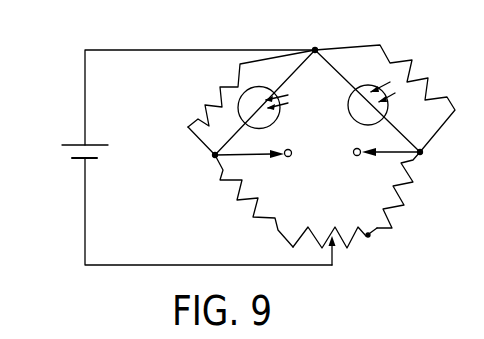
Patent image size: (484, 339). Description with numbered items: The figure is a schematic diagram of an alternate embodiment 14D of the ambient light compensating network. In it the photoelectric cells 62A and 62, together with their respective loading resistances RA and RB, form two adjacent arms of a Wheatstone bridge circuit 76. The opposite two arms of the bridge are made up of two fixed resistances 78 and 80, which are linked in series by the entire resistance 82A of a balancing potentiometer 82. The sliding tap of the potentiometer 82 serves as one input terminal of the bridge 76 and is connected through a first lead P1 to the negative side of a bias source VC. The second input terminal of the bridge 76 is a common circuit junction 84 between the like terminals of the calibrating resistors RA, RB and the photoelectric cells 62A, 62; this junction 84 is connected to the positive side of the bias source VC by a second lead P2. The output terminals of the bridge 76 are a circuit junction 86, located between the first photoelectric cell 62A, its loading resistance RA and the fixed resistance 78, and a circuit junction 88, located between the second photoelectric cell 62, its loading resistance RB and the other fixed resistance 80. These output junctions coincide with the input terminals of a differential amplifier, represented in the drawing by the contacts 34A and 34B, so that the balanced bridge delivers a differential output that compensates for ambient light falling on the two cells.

The alternate embodiment of ambient compensating network 14D is at (140, 85).
The Wheatstone bridge circuit 76 is at (324, 97).
The common circuit junction 84 is at (326, 38).
The circuit junction 86 is at (434, 163).
The circuit junction 88 is at (212, 158).
The photoelectric cell 62 is at (239, 113).
The first photoelectric cell 62A is at (387, 113).
The contact 34A is at (354, 157).
The contact 34B is at (297, 143).
The fixed resistance 78 is at (397, 210).
The fixed resistance 80 is at (237, 204).
The balancing potentiometer 82 is at (360, 246).
The entire resistance of balancing potentiometer 82A is at (292, 245).
The loading resistance RA is at (413, 63).
The loading resistance RB is at (233, 88).
The bias source VC is at (99, 151).
The first lead P1 is at (85, 238).
The second lead P2 is at (85, 80).